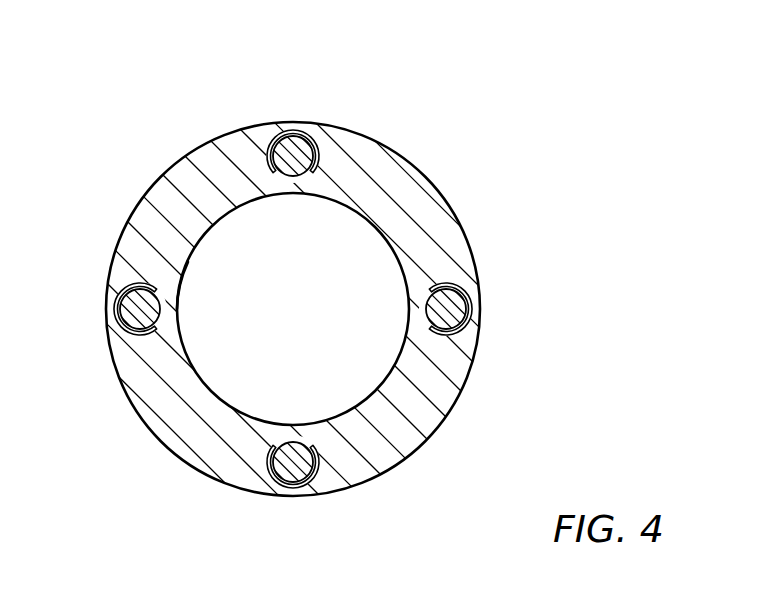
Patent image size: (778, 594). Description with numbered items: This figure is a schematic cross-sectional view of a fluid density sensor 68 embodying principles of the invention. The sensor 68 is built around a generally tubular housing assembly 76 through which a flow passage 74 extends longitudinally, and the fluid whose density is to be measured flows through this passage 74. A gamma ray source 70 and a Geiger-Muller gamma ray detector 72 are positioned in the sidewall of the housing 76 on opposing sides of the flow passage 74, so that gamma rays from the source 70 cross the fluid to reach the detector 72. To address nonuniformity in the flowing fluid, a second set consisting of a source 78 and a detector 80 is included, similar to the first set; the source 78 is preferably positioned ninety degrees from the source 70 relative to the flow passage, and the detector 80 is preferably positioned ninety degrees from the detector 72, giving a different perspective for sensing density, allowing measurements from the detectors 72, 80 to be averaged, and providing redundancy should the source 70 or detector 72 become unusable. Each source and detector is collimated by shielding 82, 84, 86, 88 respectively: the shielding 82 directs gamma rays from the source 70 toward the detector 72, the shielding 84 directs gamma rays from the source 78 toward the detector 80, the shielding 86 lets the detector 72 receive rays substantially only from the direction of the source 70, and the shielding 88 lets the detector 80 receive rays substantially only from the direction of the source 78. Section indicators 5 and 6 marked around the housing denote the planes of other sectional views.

The fluid density sensor 68 is at (444, 80).
The gamma ray source 70 is at (168, 311).
The Geiger-Muller gamma ray detector 72 is at (422, 302).
The flow passage 74 is at (273, 330).
The housing assembly 76 is at (436, 431).
The gamma ray source 78 is at (294, 178).
The gamma ray detector 80 is at (292, 440).
The shielding 82 is at (126, 335).
The shielding 84 is at (309, 140).
The shielding 86 is at (460, 290).
The shielding 88 is at (317, 483).
The section line 5- 5 is at (57, 310).
The section line 6- 6 is at (87, 155).